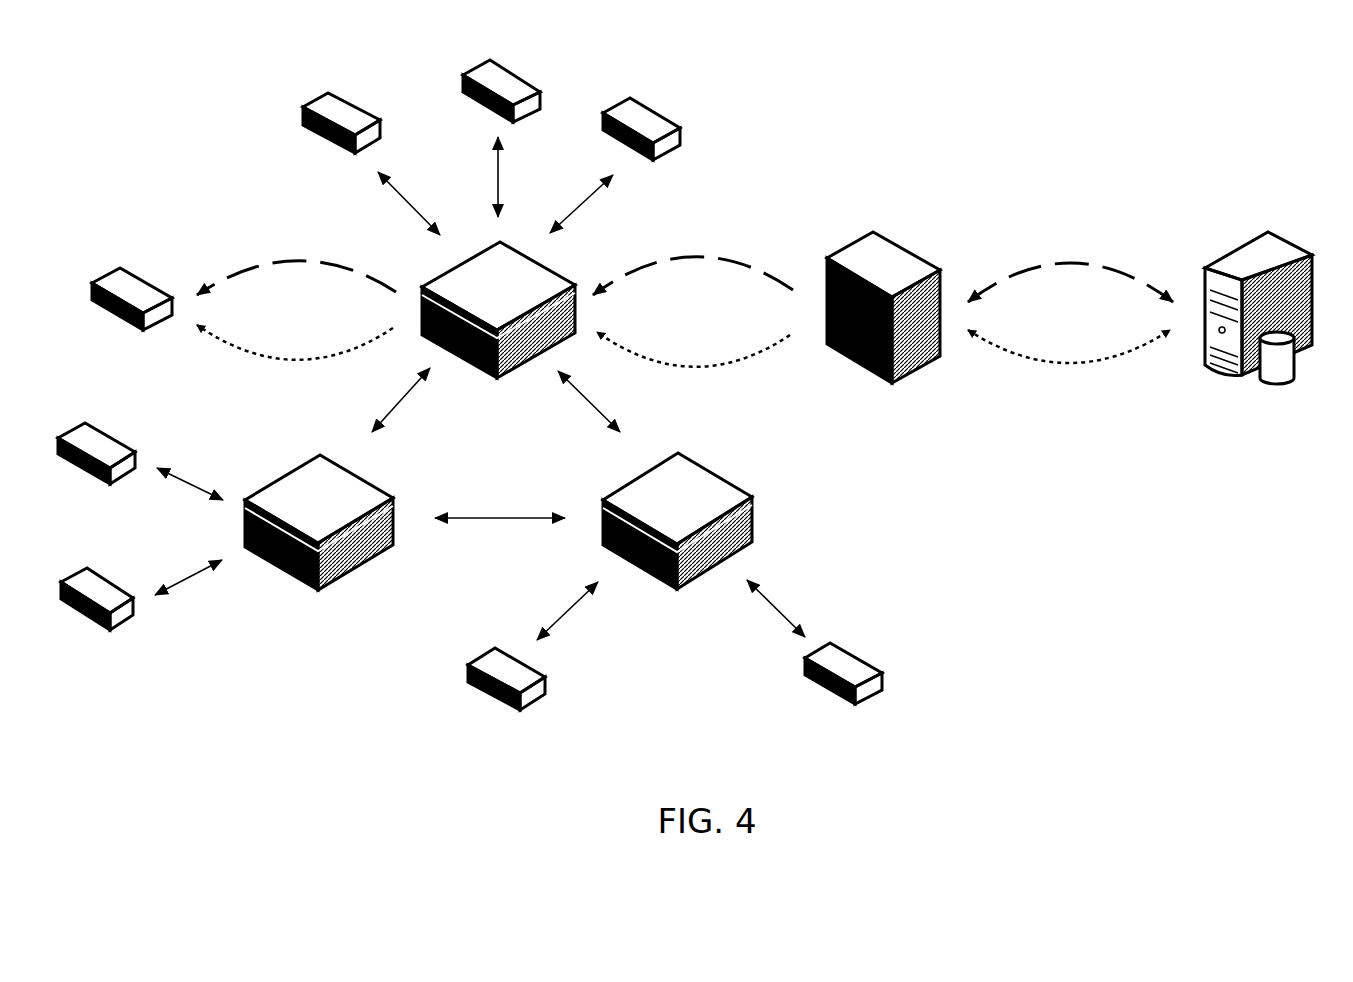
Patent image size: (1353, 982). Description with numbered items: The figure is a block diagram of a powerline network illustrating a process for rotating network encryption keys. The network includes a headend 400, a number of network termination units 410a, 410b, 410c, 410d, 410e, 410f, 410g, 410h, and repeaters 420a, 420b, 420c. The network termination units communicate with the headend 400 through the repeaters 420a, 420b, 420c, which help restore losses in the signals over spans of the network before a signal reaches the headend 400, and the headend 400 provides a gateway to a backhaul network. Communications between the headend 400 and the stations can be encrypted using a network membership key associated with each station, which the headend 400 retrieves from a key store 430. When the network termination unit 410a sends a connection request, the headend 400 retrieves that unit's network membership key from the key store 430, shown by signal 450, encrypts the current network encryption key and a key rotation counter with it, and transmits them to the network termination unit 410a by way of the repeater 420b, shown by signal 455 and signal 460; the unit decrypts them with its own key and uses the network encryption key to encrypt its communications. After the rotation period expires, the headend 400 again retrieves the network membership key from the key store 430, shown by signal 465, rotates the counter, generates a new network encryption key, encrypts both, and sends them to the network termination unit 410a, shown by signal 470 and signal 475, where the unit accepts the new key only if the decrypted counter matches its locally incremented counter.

The headend 400 is at (880, 233).
The network termination unit 410a is at (137, 273).
The network termination unit 410b is at (330, 93).
The network termination unit 410c is at (502, 63).
The network termination unit 410d is at (660, 112).
The network termination unit 410e is at (100, 427).
The network termination unit 410f is at (88, 567).
The network termination unit 410g is at (525, 710).
The network termination unit 410h is at (852, 705).
The repeater 420a is at (367, 478).
The repeater 420b is at (580, 250).
The repeater 420c is at (678, 452).
The key store 430 is at (1268, 232).
The signal 450 is at (1093, 263).
The signal 455 is at (715, 258).
The signal 460 is at (320, 262).
The signal 465 is at (1080, 365).
The signal 470 is at (698, 367).
The signal 475 is at (300, 362).